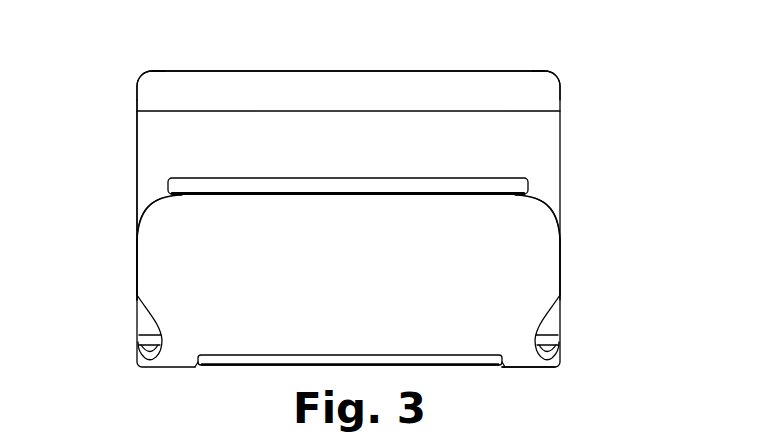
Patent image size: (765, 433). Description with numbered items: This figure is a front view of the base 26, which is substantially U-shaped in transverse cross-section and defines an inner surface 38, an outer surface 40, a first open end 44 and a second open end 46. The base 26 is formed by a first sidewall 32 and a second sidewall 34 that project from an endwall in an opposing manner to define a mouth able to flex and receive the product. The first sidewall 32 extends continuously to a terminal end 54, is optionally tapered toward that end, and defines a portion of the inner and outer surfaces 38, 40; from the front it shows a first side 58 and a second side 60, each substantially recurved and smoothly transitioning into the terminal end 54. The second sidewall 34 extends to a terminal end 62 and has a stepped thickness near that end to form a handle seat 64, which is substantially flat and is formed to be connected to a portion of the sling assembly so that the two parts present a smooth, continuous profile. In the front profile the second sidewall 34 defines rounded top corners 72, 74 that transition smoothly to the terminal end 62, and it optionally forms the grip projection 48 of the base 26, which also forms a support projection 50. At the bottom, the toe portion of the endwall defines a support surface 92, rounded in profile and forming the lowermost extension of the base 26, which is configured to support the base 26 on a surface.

The base 26 is at (94, 88).
The first sidewall 32 is at (165, 300).
The second sidewall 34 is at (152, 134).
The inner surface 38 is at (331, 159).
The outer surface 40 is at (331, 251).
The first open end 44 is at (580, 268).
The second open end 46 is at (121, 272).
The grip projection 48 is at (518, 183).
The support projection 50 is at (222, 367).
The terminal end 54 is at (497, 176).
The first side 58 is at (557, 208).
The second side 60 is at (150, 218).
The terminal end 62 is at (414, 70).
The handle seat 64 is at (331, 104).
The top corner 72 is at (558, 78).
The top corner 74 is at (141, 79).
The support surface 92 is at (518, 381).